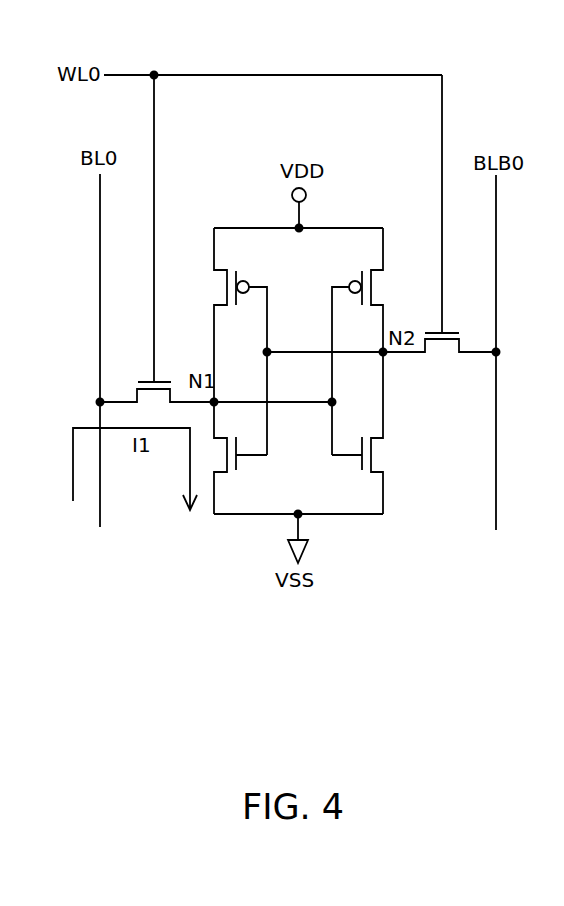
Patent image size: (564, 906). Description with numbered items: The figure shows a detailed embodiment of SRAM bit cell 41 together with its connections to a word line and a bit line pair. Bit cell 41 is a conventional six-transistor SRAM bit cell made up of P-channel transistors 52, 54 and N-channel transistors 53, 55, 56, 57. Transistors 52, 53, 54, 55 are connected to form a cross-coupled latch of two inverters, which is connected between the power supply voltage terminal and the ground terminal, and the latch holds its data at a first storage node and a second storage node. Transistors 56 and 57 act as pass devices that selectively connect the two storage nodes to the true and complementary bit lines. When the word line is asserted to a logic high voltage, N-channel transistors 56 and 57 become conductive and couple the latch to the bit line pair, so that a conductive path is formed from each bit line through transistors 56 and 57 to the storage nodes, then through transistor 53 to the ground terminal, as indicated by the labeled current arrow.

The SRAM bit cell 41 is at (390, 563).
The P-channel transistor 52 is at (229, 270).
The N-channel transistor 53 is at (233, 474).
The P-channel transistor 54 is at (367, 270).
The N-channel transistor 55 is at (363, 474).
The N-channel transistor 56 is at (145, 381).
The N-channel transistor 57 is at (447, 332).